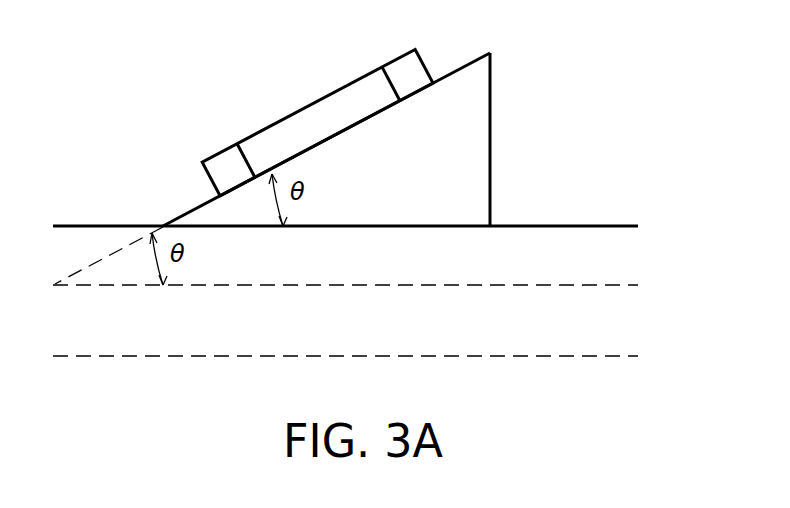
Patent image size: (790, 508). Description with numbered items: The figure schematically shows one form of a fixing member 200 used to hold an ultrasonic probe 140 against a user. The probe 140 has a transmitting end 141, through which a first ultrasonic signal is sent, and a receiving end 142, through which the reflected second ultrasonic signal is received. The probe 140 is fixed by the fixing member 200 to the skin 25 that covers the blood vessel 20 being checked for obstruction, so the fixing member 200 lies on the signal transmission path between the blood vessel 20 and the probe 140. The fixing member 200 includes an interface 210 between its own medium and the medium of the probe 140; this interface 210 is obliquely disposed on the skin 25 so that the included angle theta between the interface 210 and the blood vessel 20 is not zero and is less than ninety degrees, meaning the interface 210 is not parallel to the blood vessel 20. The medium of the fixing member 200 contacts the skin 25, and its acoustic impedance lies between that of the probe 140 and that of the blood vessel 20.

The blood vessel 20 is at (525, 285).
The skin 25 is at (611, 226).
The probe 140 is at (300, 103).
The transmitting end 141 is at (220, 150).
The receiving end 142 is at (393, 61).
The fixing member 200 is at (374, 139).
The interface 210 is at (457, 68).